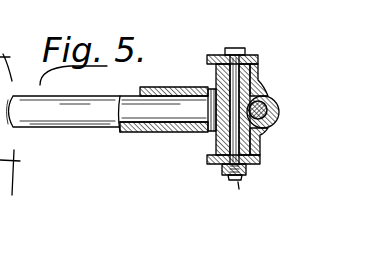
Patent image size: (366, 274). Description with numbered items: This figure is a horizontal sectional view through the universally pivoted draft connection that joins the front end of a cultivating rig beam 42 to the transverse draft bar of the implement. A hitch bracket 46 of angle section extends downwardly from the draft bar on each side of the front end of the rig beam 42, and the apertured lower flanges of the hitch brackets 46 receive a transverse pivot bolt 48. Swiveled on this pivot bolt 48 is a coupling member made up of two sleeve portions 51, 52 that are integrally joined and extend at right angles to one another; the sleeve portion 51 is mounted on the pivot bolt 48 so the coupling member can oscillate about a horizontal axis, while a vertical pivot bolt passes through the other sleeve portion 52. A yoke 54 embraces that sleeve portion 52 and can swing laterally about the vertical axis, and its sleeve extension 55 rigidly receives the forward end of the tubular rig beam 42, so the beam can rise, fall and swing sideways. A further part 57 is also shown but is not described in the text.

The rig beam 42 is at (55, 127).
The hitch bracket 46 is at (211, 58).
The transverse pivot bolt 48 is at (241, 49).
The sleeve portion 51 is at (255, 84).
The sleeve portion 52 is at (266, 90).
The yoke 54 is at (208, 133).
The sleeve extension 55 is at (143, 133).
The ball 57 is at (278, 124).